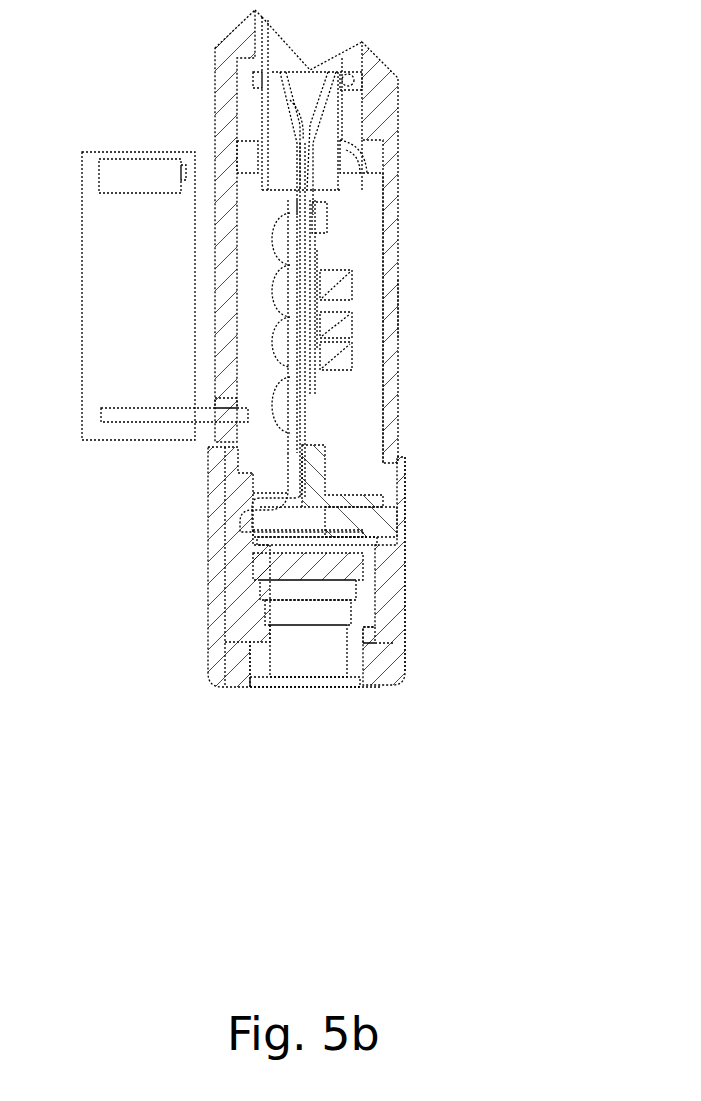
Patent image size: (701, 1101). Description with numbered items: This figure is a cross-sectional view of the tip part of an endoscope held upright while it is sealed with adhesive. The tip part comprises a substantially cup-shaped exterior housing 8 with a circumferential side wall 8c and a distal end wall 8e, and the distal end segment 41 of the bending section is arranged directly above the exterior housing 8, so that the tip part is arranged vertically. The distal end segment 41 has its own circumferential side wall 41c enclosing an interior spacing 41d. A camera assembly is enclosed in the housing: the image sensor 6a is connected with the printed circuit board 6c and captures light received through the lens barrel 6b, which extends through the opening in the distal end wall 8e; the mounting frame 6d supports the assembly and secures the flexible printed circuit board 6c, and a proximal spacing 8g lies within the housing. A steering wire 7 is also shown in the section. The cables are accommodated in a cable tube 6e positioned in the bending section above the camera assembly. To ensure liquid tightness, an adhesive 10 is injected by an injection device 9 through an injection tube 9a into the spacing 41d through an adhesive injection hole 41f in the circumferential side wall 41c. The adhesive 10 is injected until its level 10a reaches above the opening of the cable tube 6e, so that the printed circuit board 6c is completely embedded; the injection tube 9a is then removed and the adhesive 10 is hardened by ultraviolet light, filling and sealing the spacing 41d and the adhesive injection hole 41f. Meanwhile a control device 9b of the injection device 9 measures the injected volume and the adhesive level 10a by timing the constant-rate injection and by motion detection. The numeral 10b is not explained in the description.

The image sensor 6a is at (348, 568).
The lens barrel 6b is at (312, 688).
The printed circuit board 6c is at (297, 475).
The mounting frame 6d is at (377, 521).
The cable tube 6e is at (342, 185).
The steering wire 7 is at (368, 150).
The exterior housing 8 is at (195, 612).
The circumferential side wall 8c is at (403, 650).
The distal end wall 8e is at (390, 685).
The proximal spacing 8g is at (232, 520).
The injection device 9 is at (80, 230).
The injection tube 9a is at (127, 408).
The control device 9b is at (127, 158).
The adhesive 10 is at (372, 250).
The level 10a is at (247, 173).
The sleeve foot 10b is at (250, 687).
The distal end segment 41 is at (432, 315).
The circumferential side wall 41c is at (392, 308).
The spacing 41d is at (373, 163).
The adhesive injection hole 41f is at (227, 402).